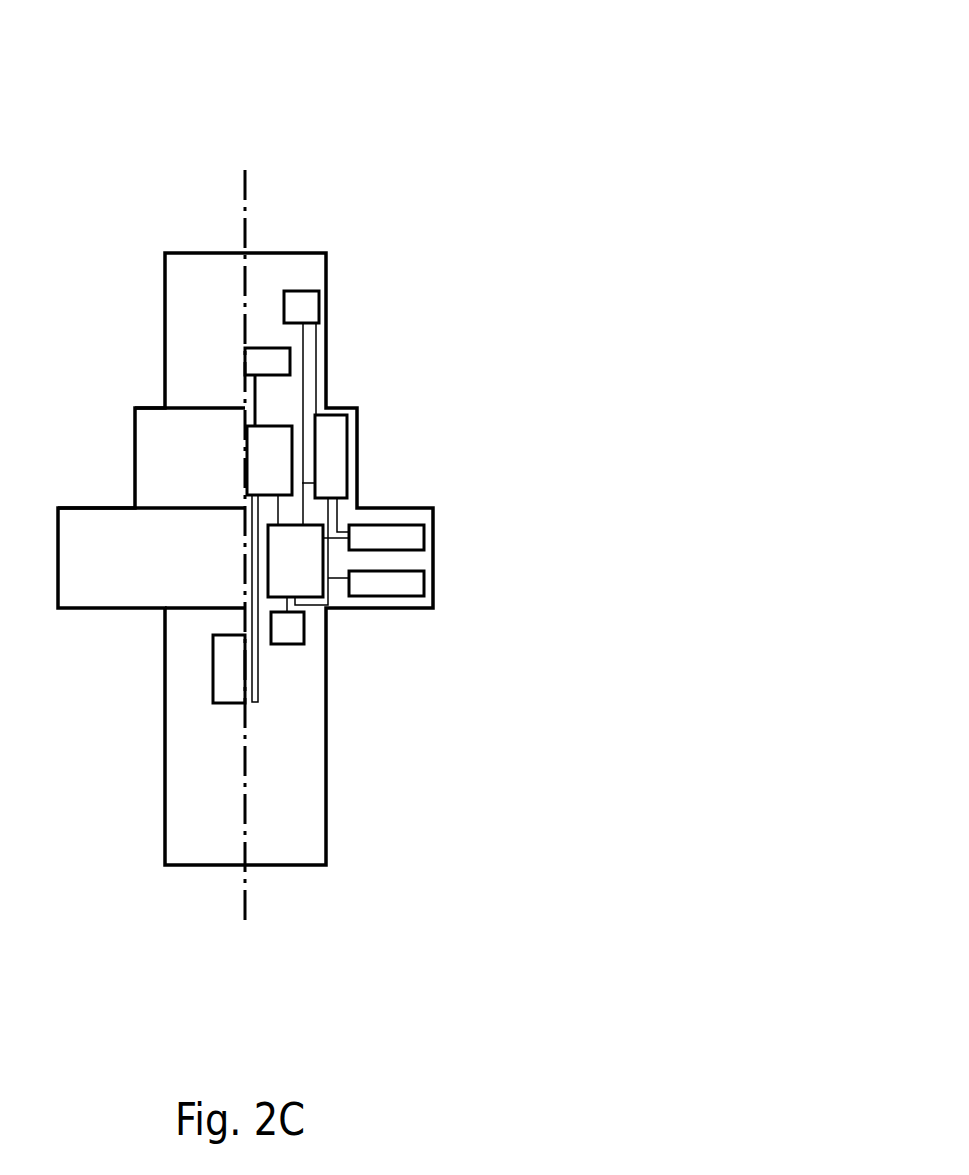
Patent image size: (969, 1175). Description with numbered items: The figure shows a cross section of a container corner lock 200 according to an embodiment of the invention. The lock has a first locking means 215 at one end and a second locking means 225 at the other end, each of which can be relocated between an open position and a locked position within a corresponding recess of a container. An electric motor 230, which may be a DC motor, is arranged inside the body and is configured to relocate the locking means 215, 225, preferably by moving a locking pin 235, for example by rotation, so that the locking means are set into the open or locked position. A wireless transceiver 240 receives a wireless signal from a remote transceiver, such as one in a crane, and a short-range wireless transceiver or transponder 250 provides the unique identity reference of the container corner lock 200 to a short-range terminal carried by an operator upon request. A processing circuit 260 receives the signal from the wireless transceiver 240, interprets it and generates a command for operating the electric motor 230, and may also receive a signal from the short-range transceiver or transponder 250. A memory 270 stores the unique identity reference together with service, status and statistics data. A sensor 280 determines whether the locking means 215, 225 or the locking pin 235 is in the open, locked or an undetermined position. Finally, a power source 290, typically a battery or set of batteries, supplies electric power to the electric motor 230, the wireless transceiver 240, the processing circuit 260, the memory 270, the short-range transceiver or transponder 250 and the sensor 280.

The container corner lock 200 is at (563, 72).
The first locking means 215 is at (212, 278).
The second locking means 225 is at (222, 657).
The electric motor 230 is at (270, 437).
The locking pin 235 is at (256, 698).
The wireless transceiver 240 is at (398, 537).
The short-range wireless transceiver or transponder 250 is at (398, 583).
The processing circuit 260 is at (305, 578).
The memory 270 is at (305, 626).
The sensor 280 is at (310, 291).
The power source 290 is at (335, 440).